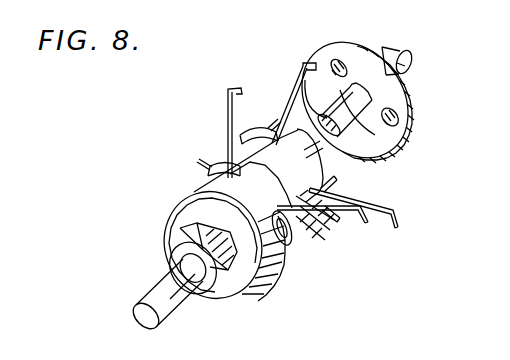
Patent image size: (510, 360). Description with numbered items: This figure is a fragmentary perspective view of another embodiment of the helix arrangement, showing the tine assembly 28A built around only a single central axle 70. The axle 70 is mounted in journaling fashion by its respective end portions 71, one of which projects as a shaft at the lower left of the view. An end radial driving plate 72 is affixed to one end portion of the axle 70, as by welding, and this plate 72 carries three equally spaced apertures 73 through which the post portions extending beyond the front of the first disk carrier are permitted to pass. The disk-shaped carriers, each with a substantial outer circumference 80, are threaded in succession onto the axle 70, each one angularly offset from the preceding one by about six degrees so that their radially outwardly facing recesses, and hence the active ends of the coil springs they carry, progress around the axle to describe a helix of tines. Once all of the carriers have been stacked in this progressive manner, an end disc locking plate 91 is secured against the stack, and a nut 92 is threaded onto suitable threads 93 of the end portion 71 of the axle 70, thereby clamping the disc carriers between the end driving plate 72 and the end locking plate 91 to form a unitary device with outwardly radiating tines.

The tine assembly 28A is at (194, 151).
The central axle 70 is at (352, 122).
The end portion 71 is at (409, 72).
The end radial driving plate 72 is at (386, 97).
The aperture 73 is at (400, 117).
The outer circumference 80 is at (264, 201).
The end disc locking plate 91 is at (276, 265).
The nut 92 is at (226, 272).
The threads 93 is at (186, 256).